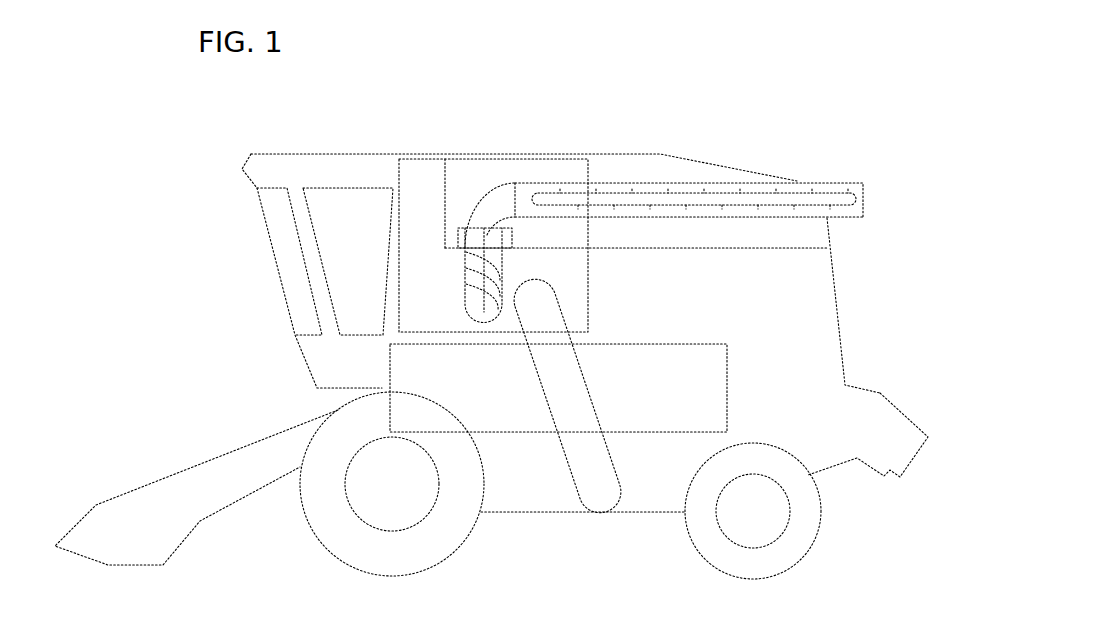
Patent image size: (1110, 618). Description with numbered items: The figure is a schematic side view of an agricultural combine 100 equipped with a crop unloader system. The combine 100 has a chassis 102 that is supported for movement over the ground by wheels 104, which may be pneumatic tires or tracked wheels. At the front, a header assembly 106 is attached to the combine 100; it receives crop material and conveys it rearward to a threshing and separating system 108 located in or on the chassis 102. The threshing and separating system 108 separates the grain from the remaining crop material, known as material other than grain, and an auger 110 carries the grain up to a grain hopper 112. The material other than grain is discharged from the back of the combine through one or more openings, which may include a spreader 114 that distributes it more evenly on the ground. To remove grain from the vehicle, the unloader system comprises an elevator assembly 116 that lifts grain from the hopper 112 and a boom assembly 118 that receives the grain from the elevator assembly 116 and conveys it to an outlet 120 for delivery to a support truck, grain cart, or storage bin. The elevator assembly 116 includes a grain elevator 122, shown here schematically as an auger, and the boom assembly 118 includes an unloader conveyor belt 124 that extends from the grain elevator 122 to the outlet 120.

The agricultural combine 100 is at (874, 78).
The chassis 102 is at (823, 323).
The wheels 104 is at (446, 532).
The header assembly 106 is at (198, 483).
The threshing and separating system 108 is at (510, 433).
The auger 110 is at (603, 511).
The grain hopper 112 is at (412, 159).
The spreader 114 is at (898, 436).
The elevator assembly 116 is at (480, 187).
The boom assembly 118 is at (805, 180).
The outlet 120 is at (867, 200).
The grain elevator 122 is at (502, 263).
The unloader conveyor belt 124 is at (717, 202).